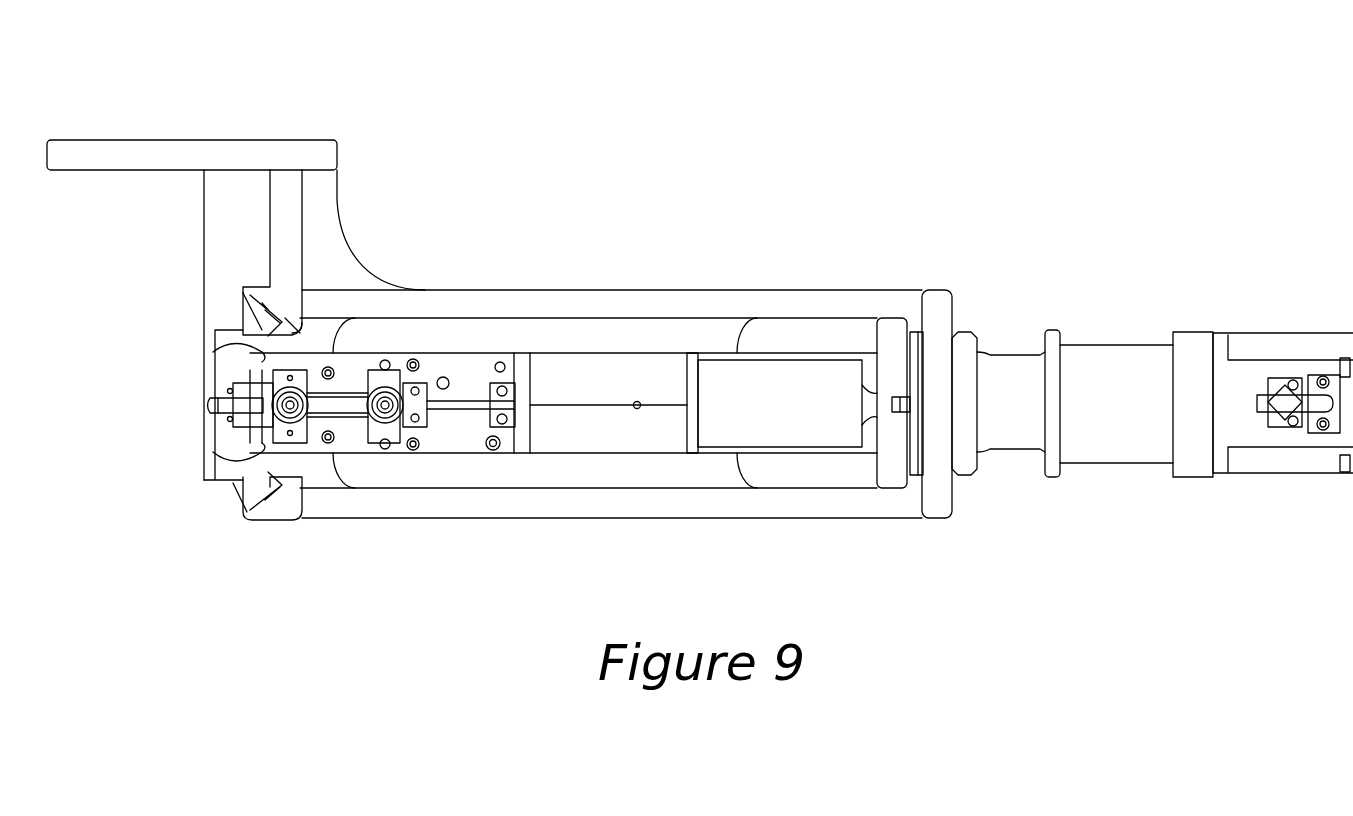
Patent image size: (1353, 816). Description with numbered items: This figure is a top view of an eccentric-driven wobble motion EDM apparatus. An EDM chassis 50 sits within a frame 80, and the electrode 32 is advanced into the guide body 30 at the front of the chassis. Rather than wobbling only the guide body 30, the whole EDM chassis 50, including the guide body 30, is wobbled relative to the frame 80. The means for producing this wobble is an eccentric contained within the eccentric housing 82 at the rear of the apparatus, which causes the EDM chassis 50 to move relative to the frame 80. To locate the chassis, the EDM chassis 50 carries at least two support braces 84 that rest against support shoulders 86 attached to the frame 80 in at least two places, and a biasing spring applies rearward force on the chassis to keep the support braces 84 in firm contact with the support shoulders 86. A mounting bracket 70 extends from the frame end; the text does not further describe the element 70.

The mounting bracket 70 is at (90, 150).
The frame 80 is at (730, 302).
The eccentric housing 82 is at (1000, 377).
The electrode 32 is at (593, 403).
The EDM chassis 50 is at (457, 456).
The guide body 30 is at (228, 405).
The support braces 84 is at (225, 352).
The support shoulders 86 is at (287, 293).